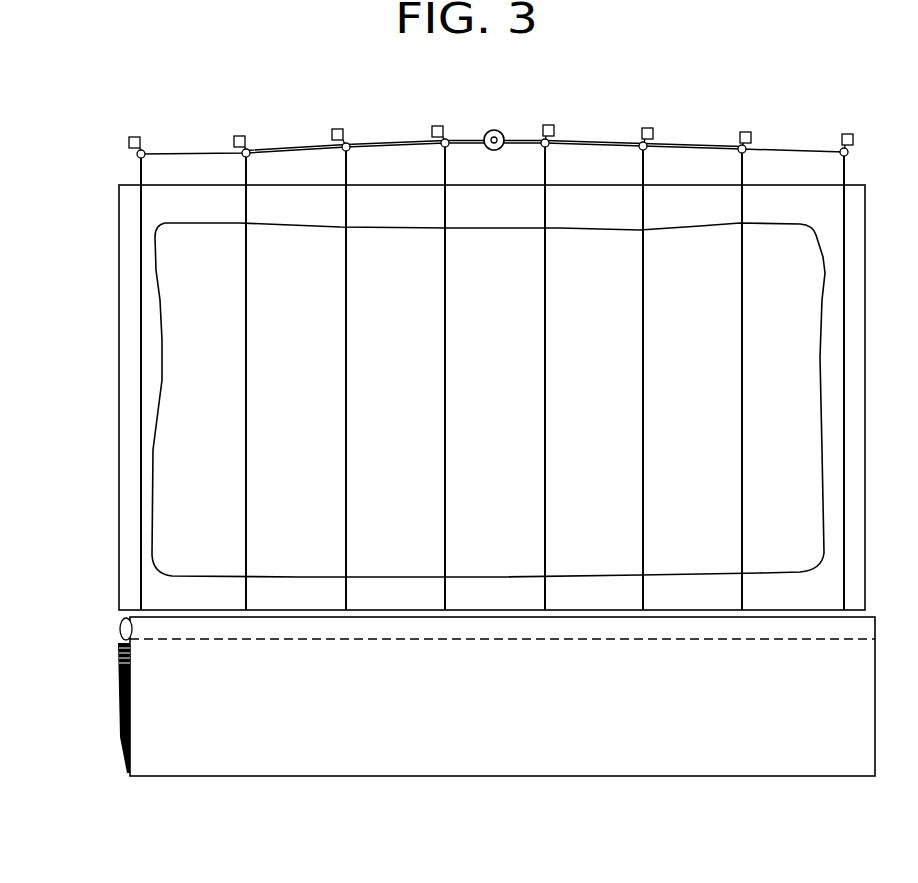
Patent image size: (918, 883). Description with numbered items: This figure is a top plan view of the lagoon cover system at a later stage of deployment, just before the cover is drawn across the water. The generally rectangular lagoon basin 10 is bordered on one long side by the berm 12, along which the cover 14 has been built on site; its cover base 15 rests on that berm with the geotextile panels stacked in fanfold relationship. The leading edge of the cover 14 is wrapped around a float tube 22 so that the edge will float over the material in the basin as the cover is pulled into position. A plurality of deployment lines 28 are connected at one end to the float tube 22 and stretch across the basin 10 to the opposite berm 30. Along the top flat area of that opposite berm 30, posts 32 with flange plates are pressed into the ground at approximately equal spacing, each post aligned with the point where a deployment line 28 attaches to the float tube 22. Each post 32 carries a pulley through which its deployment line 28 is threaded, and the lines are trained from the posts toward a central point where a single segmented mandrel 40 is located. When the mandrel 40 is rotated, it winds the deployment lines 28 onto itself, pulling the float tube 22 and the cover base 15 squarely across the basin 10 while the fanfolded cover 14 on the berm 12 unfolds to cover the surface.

The lagoon basin 10 is at (183, 330).
The berm 12 is at (672, 588).
The cover 14 is at (112, 782).
The cover base 15 is at (453, 719).
The float tube 22 is at (120, 627).
The deployment lines 28 is at (345, 412).
The opposite berm 30 is at (767, 165).
The posts 32 is at (134, 137).
The mandrel 40 is at (487, 126).